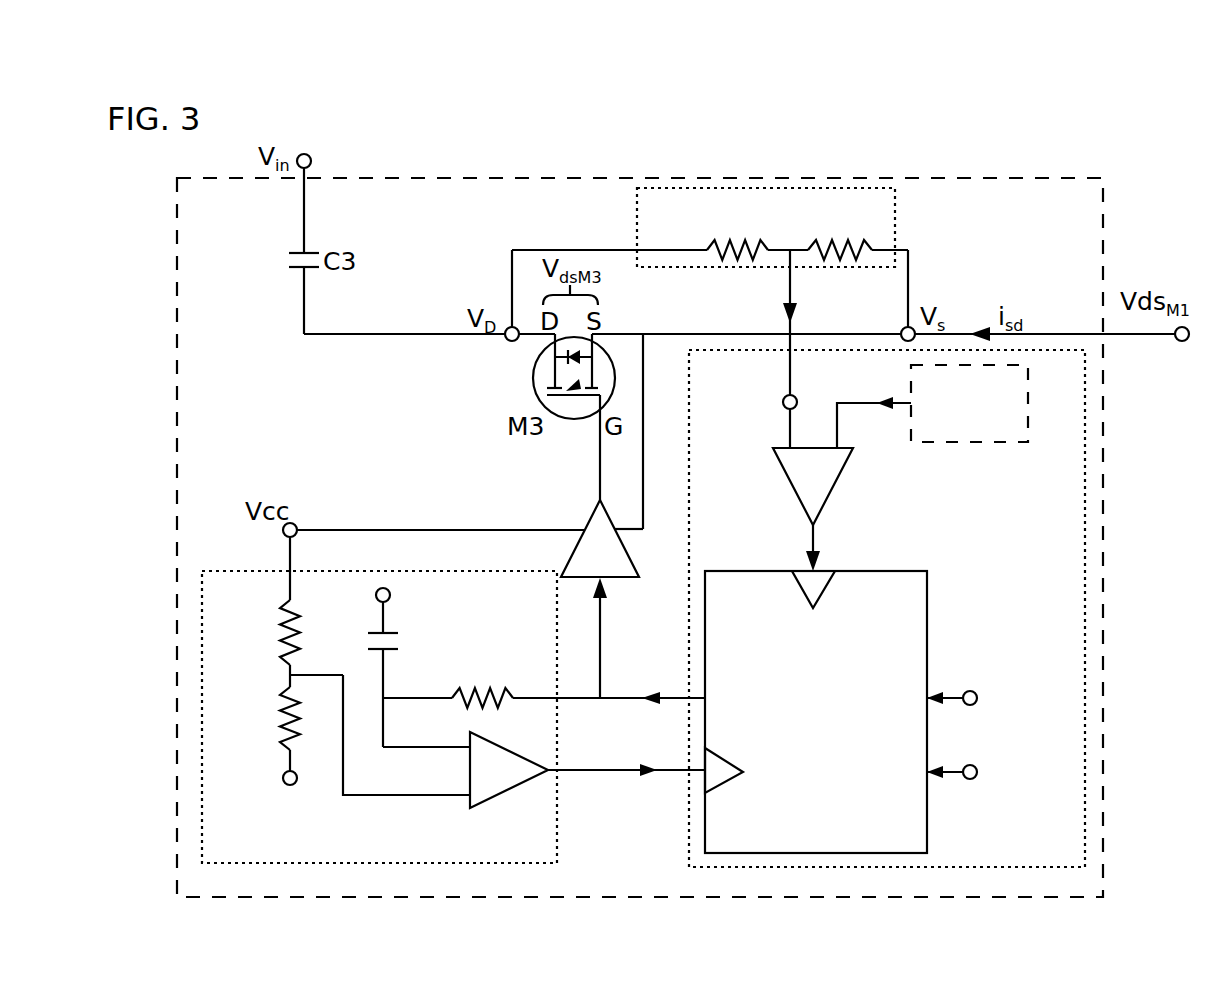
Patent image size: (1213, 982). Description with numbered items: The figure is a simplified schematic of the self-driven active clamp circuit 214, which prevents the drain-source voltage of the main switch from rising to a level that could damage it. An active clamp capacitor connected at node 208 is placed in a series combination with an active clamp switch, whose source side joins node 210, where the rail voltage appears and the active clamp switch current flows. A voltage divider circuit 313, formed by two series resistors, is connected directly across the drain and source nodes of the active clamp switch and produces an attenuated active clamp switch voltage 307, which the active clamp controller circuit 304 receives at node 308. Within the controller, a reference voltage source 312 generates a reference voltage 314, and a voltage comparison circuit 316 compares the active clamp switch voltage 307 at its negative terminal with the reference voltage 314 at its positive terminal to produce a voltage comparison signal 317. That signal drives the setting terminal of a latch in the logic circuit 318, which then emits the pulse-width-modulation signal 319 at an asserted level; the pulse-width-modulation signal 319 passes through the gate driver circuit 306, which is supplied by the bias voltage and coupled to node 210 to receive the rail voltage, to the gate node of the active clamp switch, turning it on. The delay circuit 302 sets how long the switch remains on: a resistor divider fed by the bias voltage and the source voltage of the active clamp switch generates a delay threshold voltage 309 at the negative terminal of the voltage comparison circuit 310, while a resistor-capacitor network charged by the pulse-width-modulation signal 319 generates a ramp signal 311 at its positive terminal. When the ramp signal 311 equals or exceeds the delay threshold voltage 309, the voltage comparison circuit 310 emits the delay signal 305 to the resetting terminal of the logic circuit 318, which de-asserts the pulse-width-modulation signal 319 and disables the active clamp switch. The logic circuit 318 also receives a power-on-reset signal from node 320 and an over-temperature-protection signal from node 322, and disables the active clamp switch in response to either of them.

The input voltage terminal 208 is at (309, 156).
The node 210 is at (1178, 342).
The self-driven active clamp circuit 214 is at (247, 218).
The delay circuit 302 is at (401, 717).
The active clamp controller circuit 304 is at (1073, 861).
The delay signal 305 is at (583, 773).
The gate driver circuit 306 is at (597, 520).
The active clamp switch voltage 307 is at (793, 365).
The node 308 is at (785, 412).
The delay threshold voltage 309 is at (363, 797).
The voltage comparison circuit 310 is at (473, 808).
The ramp signal 311 is at (400, 748).
The reference voltage source 312 is at (1022, 439).
The voltage divider circuit 313 is at (689, 219).
The reference voltage 314 is at (848, 405).
The voltage comparison circuit 316 is at (840, 473).
The voltage comparison signal 317 is at (808, 530).
The logic circuit 318 is at (919, 844).
The PWM signal 319 is at (615, 700).
The node 320 is at (975, 704).
The node 322 is at (975, 778).